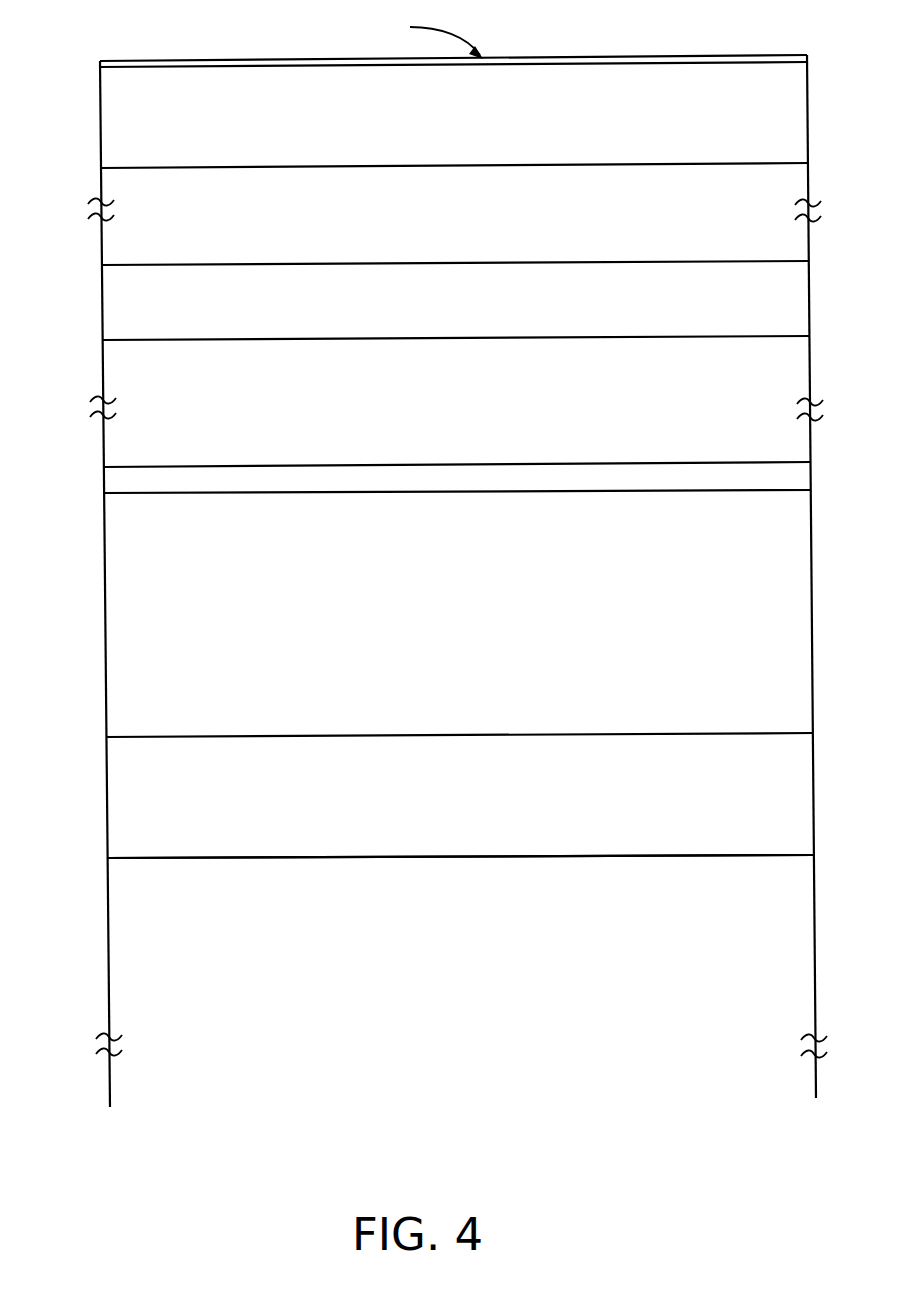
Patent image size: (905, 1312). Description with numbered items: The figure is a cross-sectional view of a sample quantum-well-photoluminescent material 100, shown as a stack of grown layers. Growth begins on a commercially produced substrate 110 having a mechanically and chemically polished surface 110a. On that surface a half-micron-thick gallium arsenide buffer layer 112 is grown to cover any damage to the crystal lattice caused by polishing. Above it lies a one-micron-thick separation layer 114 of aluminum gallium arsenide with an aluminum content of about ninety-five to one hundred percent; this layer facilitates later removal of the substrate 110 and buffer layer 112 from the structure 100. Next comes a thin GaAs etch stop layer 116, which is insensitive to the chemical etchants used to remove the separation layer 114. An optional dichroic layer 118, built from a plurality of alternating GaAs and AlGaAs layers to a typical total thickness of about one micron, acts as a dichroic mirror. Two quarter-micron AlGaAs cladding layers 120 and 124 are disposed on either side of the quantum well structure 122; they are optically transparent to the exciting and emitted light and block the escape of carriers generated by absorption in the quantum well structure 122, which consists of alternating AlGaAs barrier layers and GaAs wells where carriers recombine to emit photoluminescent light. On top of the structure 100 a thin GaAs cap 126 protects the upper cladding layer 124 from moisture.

The quantum-well-photoluminescent material 100 is at (43, 1028).
The substrate 110 is at (119, 912).
The polished surface 110a is at (113, 858).
The buffer layer 112 is at (118, 791).
The separation layer 114 is at (117, 601).
The etch stop layer 116 is at (114, 484).
The dichroic layer 118 is at (113, 441).
The cladding layer 120 is at (112, 305).
The quantum well structure 122 is at (110, 189).
The cladding layer 124 is at (110, 112).
The cap 126 is at (100, 61).